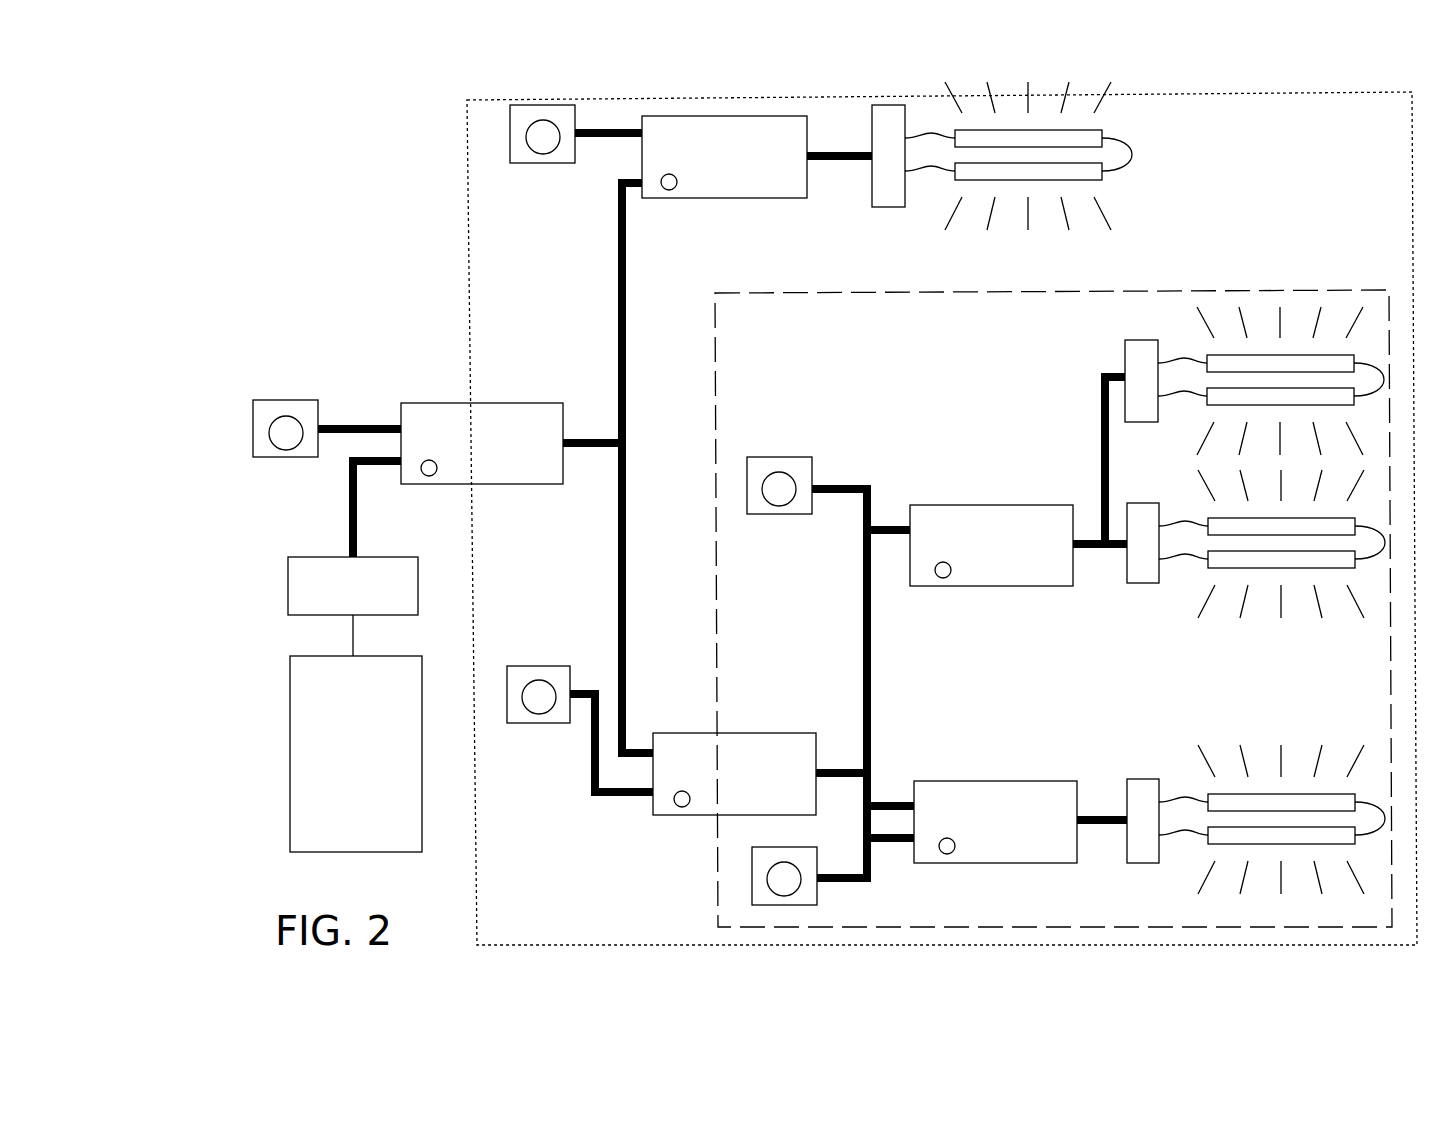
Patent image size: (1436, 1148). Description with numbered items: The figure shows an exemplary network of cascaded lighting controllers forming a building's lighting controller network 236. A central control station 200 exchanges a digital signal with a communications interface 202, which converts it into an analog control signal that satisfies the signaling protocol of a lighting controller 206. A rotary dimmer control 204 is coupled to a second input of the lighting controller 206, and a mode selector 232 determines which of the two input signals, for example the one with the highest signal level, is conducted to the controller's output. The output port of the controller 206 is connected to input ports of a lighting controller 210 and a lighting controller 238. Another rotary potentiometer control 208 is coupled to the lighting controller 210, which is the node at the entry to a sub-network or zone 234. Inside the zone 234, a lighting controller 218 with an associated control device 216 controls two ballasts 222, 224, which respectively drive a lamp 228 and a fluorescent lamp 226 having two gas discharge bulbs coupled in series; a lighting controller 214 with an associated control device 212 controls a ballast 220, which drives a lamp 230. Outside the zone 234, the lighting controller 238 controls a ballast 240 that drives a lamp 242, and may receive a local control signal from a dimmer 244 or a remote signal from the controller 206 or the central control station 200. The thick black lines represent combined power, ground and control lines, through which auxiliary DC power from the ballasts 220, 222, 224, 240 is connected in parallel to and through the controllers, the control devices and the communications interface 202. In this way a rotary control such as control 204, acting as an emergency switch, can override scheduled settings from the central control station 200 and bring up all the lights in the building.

The central control station 200 is at (356, 754).
The communications interface 202 is at (288, 593).
The rotary dimmer control 204 is at (300, 457).
The lighting controller 206 is at (503, 468).
The rotary potentiometer control 208 is at (547, 723).
The lighting controller 210 is at (762, 774).
The control device 212 is at (752, 870).
The lighting controller 214 is at (995, 822).
The control device 216 is at (781, 457).
The lighting controller 218 is at (1018, 481).
The ballast 220 is at (1140, 778).
The ballast 222 is at (1140, 585).
The ballast 224 is at (1140, 340).
The fluorescent lamp 226 is at (1253, 296).
The lamp 228 is at (1256, 626).
The lamp 230 is at (1214, 742).
The mode selector 232 is at (434, 476).
The sub-network zone 234 is at (1051, 595).
The lighting system 236 is at (942, 518).
The lighting controller 238 is at (757, 157).
The ballast 240 is at (861, 171).
The lamp 242 is at (1125, 189).
The dimmer 244 is at (530, 136).